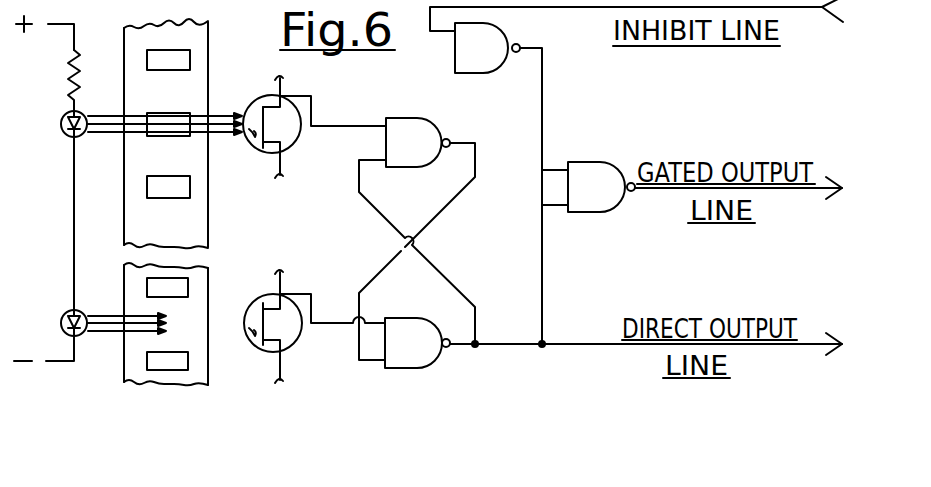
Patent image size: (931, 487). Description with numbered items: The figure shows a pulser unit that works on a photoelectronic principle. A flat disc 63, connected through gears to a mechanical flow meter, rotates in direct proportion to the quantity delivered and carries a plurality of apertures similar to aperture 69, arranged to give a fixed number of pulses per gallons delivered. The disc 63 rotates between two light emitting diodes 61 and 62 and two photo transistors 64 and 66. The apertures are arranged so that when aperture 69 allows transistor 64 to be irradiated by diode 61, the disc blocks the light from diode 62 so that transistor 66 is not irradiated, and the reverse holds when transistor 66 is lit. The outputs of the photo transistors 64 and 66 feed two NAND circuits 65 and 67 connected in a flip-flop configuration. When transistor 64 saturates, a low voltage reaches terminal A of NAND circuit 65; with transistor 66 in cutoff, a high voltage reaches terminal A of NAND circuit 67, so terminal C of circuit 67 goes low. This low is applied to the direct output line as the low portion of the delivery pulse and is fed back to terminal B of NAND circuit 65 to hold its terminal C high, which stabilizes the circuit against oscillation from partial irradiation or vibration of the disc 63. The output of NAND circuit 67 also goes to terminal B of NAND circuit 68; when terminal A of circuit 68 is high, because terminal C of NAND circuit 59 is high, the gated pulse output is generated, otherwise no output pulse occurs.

The NAND circuit 59 is at (504, 33).
The light emitting diode 61 is at (60, 120).
The light emitting diode 62 is at (60, 318).
The flat disc 63 is at (126, 34).
The photo transistor 64 is at (257, 96).
The NAND circuit 65 is at (417, 118).
The photo transistor 66 is at (252, 300).
The NAND circuit 67 is at (613, 323).
The NAND circuit 68 is at (603, 162).
The aperture 69 is at (153, 116).